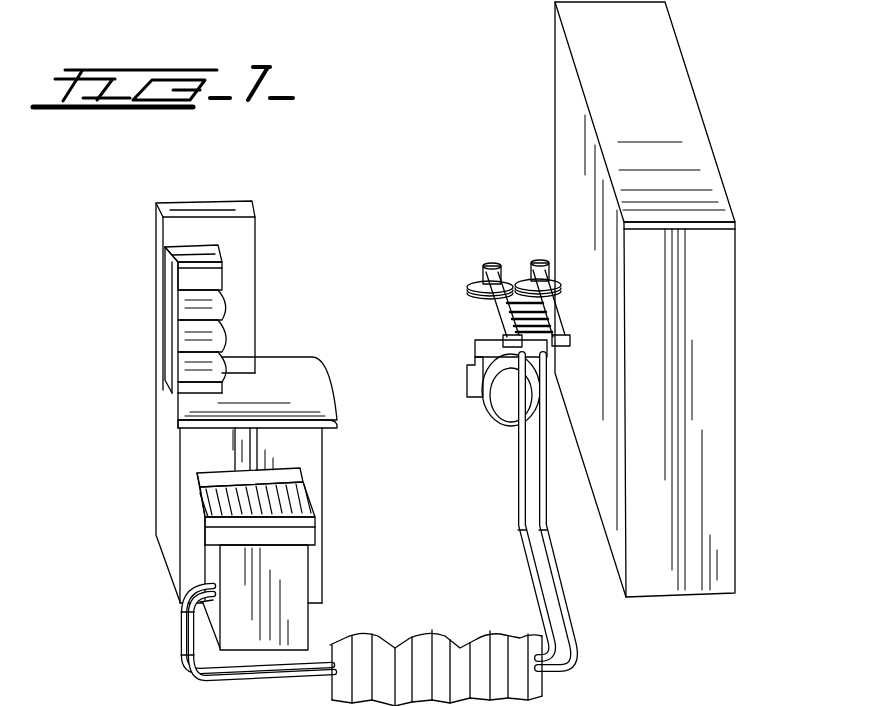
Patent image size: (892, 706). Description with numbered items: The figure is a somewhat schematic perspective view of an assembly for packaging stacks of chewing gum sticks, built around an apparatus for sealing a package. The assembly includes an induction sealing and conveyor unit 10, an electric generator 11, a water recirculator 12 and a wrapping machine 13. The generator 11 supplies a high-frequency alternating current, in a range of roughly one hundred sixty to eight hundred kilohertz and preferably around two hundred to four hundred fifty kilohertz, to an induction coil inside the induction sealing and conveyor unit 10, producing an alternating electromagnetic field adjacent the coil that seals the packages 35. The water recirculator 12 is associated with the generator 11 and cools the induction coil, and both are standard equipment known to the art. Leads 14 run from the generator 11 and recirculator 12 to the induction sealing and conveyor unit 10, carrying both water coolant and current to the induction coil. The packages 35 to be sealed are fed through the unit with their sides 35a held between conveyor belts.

The induction sealing and conveyor unit 10 is at (508, 252).
The electric generator 11 is at (318, 619).
The water recirculator 12 is at (312, 335).
The wrapping machine 13 is at (731, 168).
The leads 14 is at (537, 590).
The packages 35 is at (316, 646).
The side of package 35a is at (176, 653).